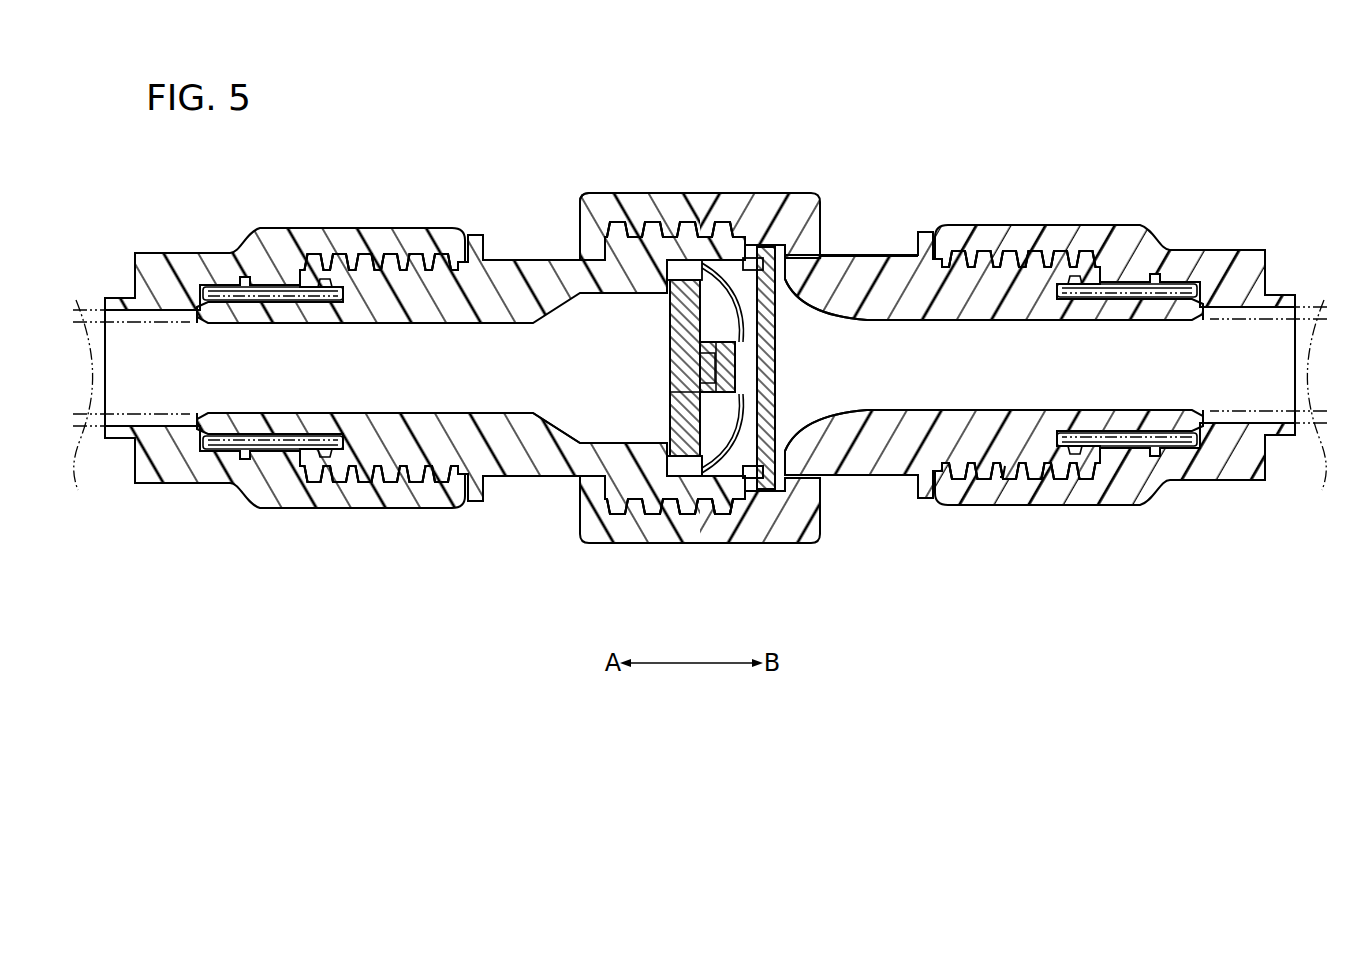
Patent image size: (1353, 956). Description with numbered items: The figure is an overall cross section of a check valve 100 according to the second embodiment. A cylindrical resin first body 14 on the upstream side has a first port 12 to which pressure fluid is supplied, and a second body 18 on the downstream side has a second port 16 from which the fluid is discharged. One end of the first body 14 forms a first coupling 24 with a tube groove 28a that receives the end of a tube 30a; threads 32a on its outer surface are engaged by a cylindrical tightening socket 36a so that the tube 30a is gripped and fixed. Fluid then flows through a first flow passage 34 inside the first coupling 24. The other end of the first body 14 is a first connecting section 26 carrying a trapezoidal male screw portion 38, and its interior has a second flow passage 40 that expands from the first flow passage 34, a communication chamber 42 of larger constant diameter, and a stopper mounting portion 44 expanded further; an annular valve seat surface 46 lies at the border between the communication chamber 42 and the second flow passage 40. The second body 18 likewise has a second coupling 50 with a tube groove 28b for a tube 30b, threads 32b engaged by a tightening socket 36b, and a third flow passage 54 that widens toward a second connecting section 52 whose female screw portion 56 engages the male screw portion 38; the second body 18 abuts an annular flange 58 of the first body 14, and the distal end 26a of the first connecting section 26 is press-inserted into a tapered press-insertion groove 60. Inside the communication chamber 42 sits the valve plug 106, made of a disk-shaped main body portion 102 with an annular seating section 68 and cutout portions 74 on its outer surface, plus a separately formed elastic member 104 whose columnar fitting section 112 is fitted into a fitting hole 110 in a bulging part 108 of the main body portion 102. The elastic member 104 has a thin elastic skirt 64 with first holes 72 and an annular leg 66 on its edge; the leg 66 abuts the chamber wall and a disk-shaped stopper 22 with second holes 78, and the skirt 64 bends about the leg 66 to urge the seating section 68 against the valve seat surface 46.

The first port 12 is at (230, 324).
The first body 14 is at (514, 243).
The second port 16 is at (1140, 320).
The second body 18 is at (892, 234).
The stopper 22 is at (786, 353).
The first coupling 24 is at (291, 262).
The first connecting section 26 is at (626, 248).
The distal end of the first connecting section 26a is at (793, 240).
The tube groove 28a is at (293, 443).
The tube groove 28b is at (1083, 442).
The tube 30a is at (132, 411).
The tube 30b is at (1269, 407).
The threads 32a is at (359, 255).
The threads 32b is at (1036, 252).
The first flow passage 34 is at (412, 392).
The tightening socket 36a is at (176, 489).
The tightening socket 36b is at (1223, 492).
The male screw portion 38 is at (683, 503).
The second flow passage 40 is at (582, 412).
The communication chamber 42 is at (730, 505).
The stopper mounting portion 44 is at (768, 490).
The valve seat surface 46 is at (687, 256).
The second coupling 50 is at (1010, 455).
The second connecting section 52 is at (718, 200).
The third flow passage 54 is at (920, 398).
The female screw portion 56 is at (640, 507).
The annular flange 58 is at (590, 198).
The press-insertion groove 60 is at (742, 258).
The skirt 64 is at (800, 410).
The leg 66 is at (765, 472).
The seating section 68 is at (666, 450).
The first holes 72 is at (824, 256).
The cutout portions 74 is at (672, 483).
The second holes 78 is at (790, 305).
The check valve 100 is at (1012, 132).
The main body portion 102 is at (670, 353).
The elastic member 104 is at (746, 416).
The valve plug 106 is at (660, 326).
The bulging part 108 is at (709, 470).
The fitting hole 110 is at (705, 392).
The fitting section 112 is at (740, 382).